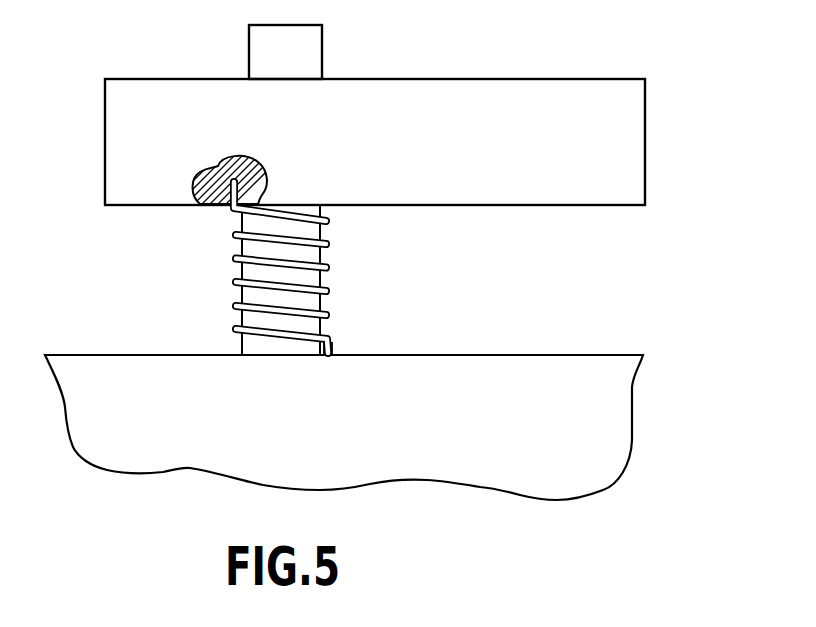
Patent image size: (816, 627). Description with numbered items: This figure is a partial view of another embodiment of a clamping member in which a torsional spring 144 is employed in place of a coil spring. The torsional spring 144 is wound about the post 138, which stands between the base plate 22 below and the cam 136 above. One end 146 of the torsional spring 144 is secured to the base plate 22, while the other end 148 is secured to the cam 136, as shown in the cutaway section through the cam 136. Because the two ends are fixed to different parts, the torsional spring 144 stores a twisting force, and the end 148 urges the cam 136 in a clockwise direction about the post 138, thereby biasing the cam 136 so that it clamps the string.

The cam 136 is at (615, 79).
The other end of the torsional spring 148 is at (218, 170).
The torsional spring 144 is at (332, 248).
The post 138 is at (238, 319).
The one end of the torsional spring 146 is at (335, 346).
The base plate 22 is at (608, 355).